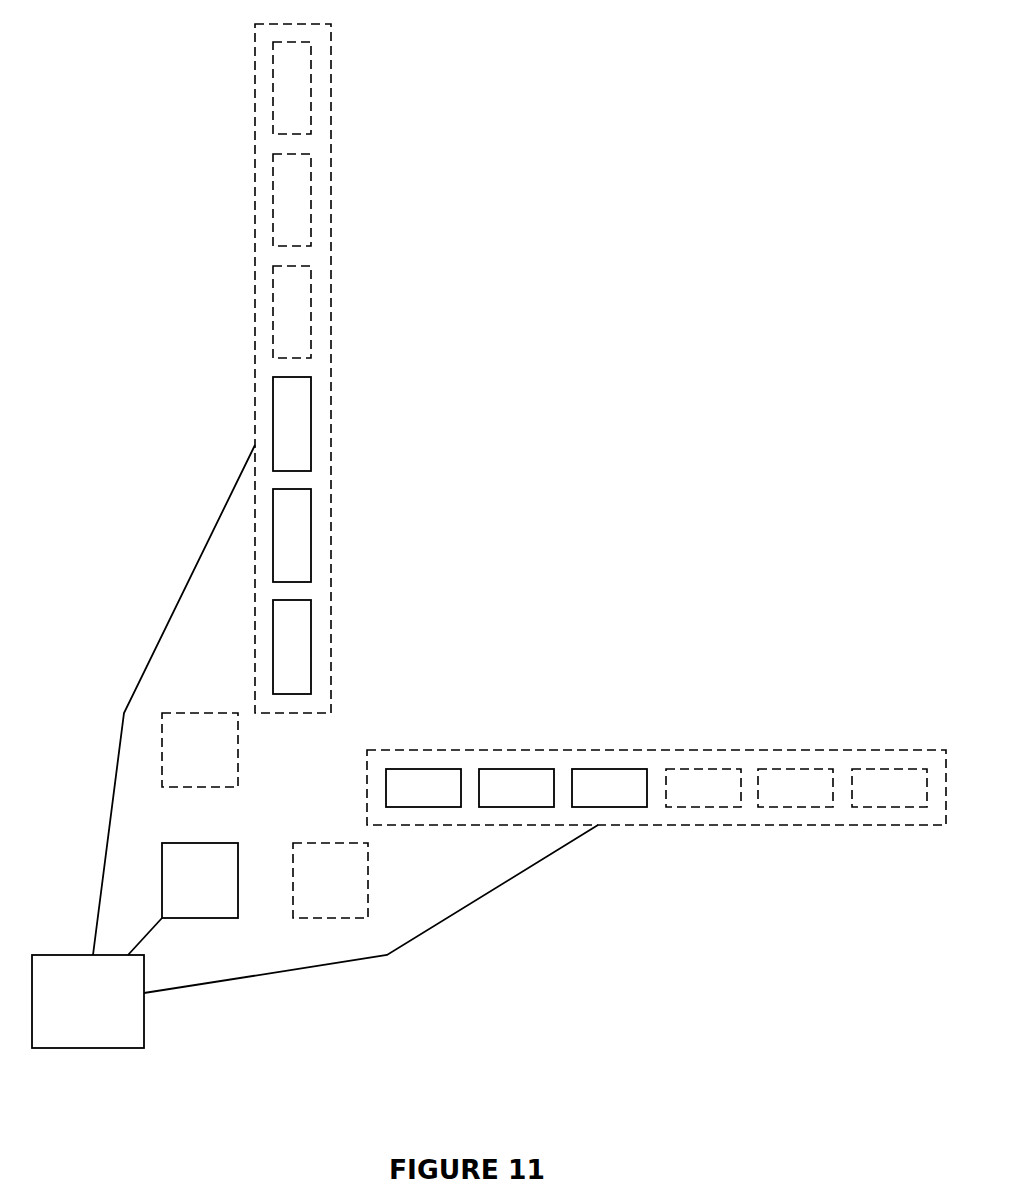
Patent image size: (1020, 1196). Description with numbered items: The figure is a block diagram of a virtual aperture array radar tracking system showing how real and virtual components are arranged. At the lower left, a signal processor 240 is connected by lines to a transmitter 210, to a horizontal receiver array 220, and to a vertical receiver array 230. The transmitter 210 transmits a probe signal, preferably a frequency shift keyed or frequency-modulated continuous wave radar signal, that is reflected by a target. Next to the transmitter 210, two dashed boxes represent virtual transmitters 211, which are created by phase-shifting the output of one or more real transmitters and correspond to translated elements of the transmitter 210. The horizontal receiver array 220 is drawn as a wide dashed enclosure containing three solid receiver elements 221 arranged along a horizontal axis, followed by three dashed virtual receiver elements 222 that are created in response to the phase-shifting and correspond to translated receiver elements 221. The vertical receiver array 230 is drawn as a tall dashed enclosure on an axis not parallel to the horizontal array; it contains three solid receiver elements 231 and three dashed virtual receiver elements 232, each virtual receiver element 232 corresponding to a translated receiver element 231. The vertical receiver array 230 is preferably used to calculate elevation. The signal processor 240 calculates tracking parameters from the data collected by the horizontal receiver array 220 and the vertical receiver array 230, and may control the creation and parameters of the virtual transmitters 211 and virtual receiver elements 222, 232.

The transmitter 210 is at (200, 880).
The virtual transmitter 211 is at (265, 815).
The horizontal receiver array 220 is at (656, 767).
The receiver element 221 is at (516, 788).
The virtual receiver element 222 is at (796, 788).
The vertical receiver array 230 is at (325, 368).
The receiver element 231 is at (292, 535).
The virtual receiver element 232 is at (292, 200).
The signal processor 240 is at (88, 1001).